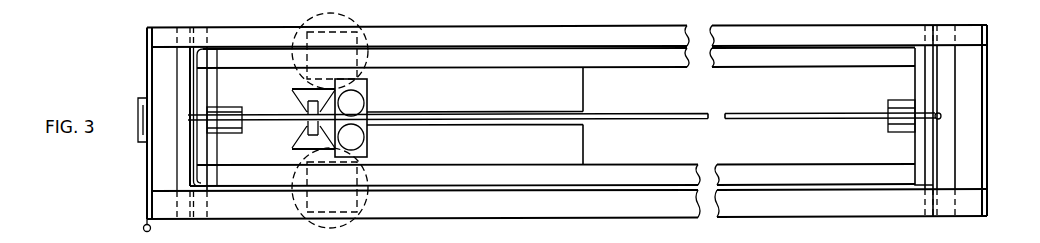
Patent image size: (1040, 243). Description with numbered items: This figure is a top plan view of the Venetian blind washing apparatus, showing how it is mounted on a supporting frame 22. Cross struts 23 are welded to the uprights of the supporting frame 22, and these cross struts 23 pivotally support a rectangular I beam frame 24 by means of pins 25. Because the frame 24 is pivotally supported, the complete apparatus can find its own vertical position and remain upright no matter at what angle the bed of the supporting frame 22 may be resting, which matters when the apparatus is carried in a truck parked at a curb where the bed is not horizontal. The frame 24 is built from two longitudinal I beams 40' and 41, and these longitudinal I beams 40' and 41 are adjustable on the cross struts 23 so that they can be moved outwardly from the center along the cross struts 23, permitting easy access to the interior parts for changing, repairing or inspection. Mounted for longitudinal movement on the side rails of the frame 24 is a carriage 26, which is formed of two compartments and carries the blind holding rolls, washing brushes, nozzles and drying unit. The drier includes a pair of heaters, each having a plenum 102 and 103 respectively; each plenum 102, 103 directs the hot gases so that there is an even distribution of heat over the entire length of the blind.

The supporting frame 22 is at (147, 56).
The cross struts 23 is at (178, 160).
The rectangular I beam frame 24 is at (190, 183).
The pins 25 is at (188, 118).
The carriage 26 is at (475, 116).
The longitudinal I beam 40' is at (556, 74).
The longitudinal I beam 41 is at (618, 172).
The plenum 102 is at (310, 103).
The plenum 103 is at (308, 135).